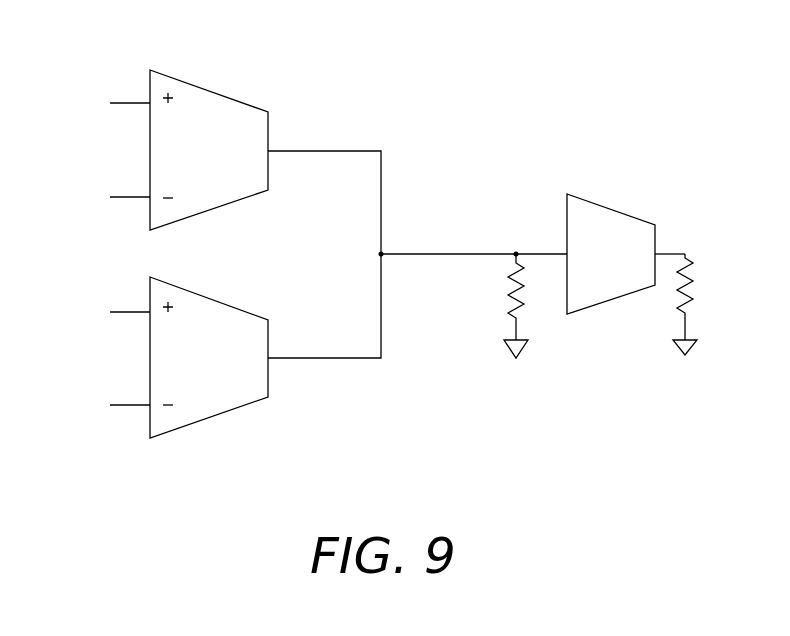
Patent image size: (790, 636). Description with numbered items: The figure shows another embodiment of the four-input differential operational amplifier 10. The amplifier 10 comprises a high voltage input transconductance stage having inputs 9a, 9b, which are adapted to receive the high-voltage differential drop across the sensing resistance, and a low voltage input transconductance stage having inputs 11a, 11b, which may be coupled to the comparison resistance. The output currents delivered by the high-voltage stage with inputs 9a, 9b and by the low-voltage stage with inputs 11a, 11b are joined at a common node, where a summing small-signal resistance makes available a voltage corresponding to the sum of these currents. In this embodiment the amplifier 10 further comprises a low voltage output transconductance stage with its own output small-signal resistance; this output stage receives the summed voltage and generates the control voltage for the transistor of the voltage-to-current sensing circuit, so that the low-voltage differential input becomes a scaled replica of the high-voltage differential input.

The four input differential operational amplifier 10 is at (438, 73).
The input of high voltage input transconductance stage 9a is at (130, 91).
The input of high voltage input transconductance stage 9b is at (130, 185).
The input of low voltage input transconductance stage 11a is at (129, 300).
The input of low voltage input transconductance stage 11b is at (129, 393).